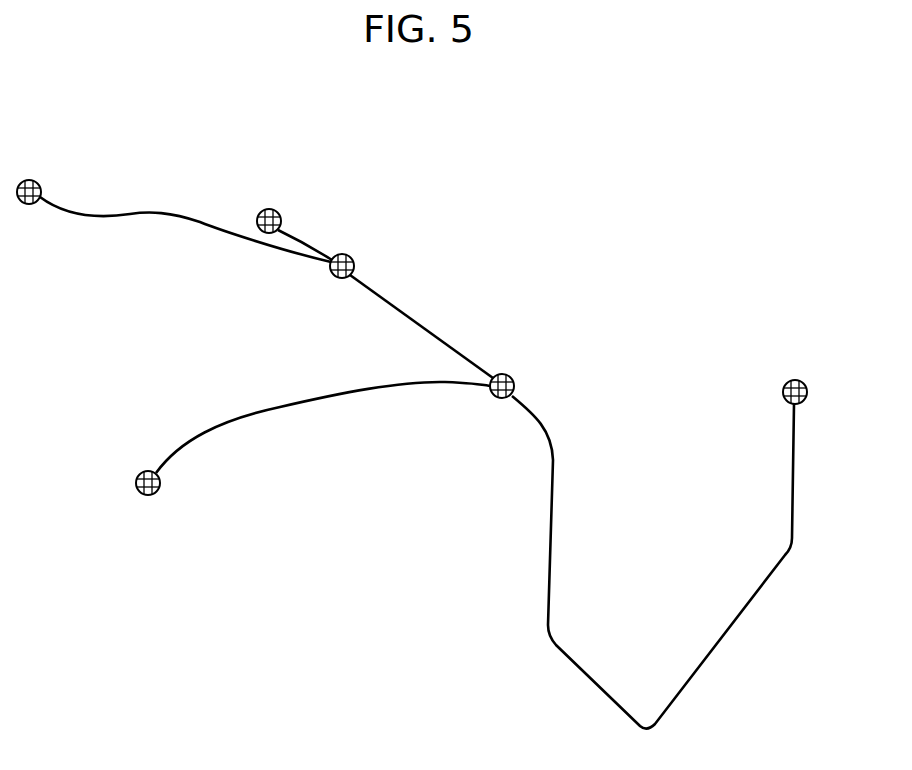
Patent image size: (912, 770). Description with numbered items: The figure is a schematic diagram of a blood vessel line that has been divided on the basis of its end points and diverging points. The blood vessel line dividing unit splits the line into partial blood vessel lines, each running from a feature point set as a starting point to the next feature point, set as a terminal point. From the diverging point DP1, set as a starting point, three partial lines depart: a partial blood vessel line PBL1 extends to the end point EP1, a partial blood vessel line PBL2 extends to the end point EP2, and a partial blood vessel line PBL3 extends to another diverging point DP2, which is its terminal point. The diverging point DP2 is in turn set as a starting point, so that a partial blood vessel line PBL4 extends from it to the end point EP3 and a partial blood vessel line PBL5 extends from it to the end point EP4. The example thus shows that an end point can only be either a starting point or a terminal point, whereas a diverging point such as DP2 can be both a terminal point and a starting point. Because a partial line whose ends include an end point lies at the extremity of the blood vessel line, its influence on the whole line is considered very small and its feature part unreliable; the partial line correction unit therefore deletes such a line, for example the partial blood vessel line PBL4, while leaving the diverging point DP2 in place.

The end point EP1 is at (795, 380).
The end point EP2 is at (136, 483).
The end point EP3 is at (272, 209).
The end point EP4 is at (32, 180).
The diverging point DP1 is at (513, 377).
The diverging point DP2 is at (352, 258).
The partial blood vessel line PBL1 is at (647, 725).
The partial blood vessel line PBL2 is at (360, 394).
The partial blood vessel line PBL3 is at (424, 326).
The partial blood vessel line PBL4 is at (308, 246).
The partial blood vessel line PBL5 is at (202, 224).